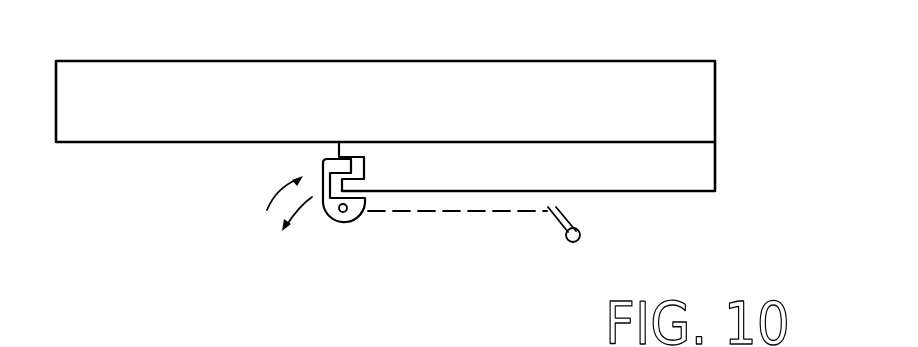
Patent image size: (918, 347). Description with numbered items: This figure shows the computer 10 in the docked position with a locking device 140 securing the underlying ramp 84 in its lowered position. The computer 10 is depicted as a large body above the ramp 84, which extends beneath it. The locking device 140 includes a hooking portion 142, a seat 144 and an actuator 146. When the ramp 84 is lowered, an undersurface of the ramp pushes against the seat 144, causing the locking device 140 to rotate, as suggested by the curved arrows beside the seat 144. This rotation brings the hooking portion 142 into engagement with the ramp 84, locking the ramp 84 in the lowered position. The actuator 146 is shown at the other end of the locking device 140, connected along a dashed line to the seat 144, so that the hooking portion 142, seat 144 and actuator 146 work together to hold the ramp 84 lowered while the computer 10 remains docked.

The computer 10 is at (558, 61).
The ramp 84 is at (710, 163).
The locking device 140 is at (543, 230).
The hooking portion 142 is at (336, 149).
The seat 144 is at (331, 222).
The actuator 146 is at (578, 222).